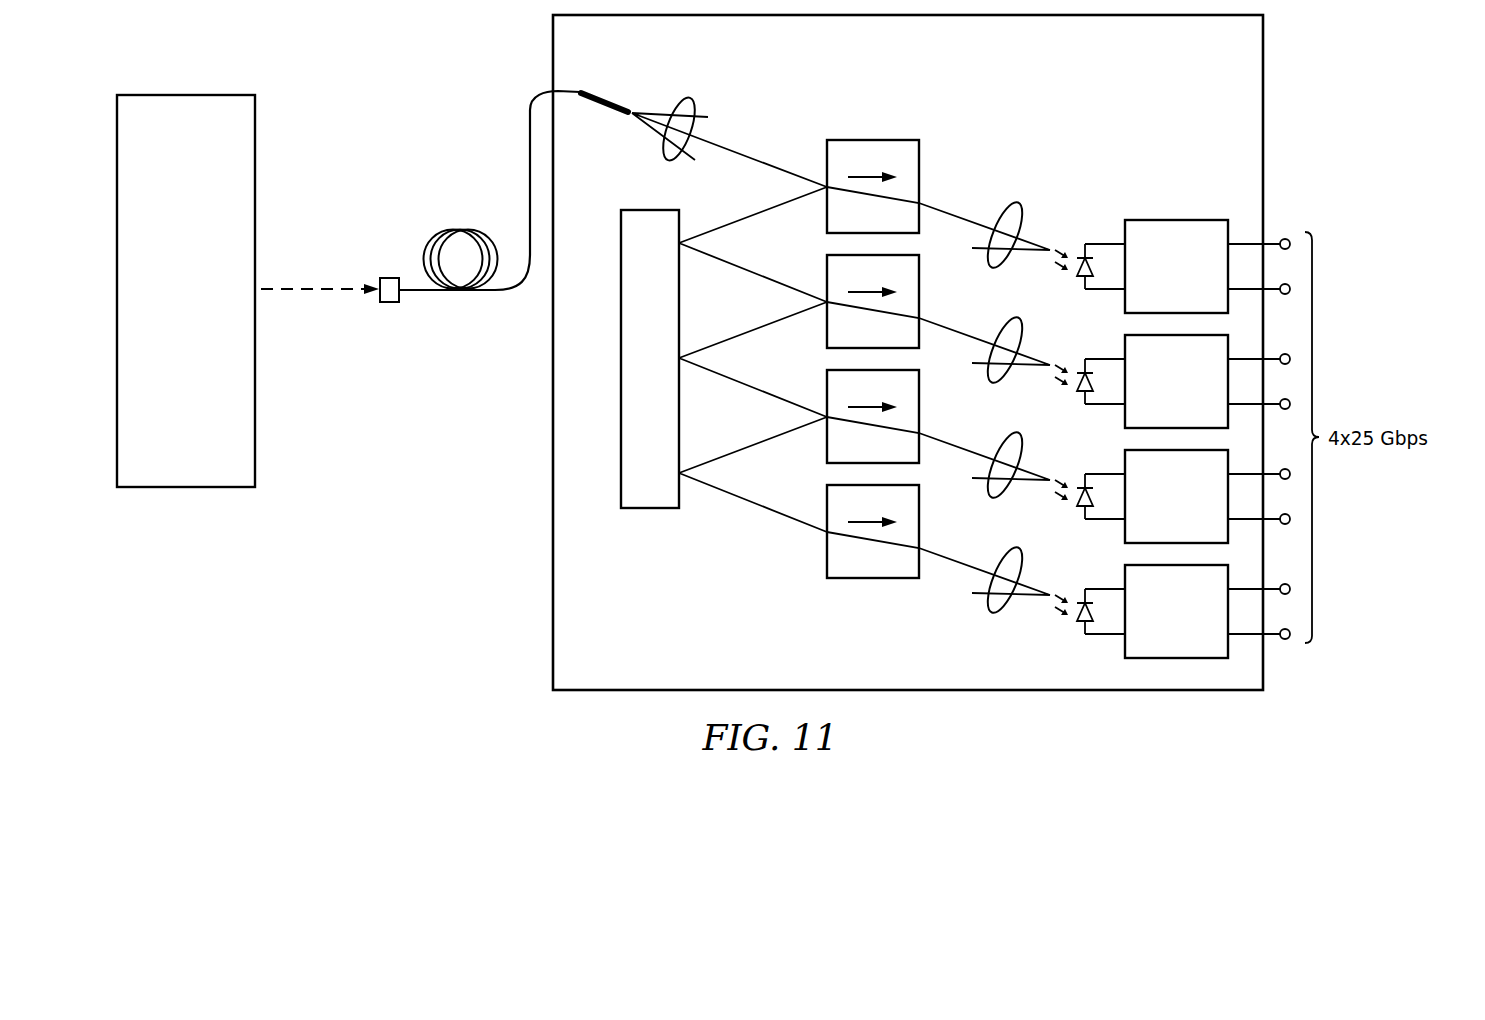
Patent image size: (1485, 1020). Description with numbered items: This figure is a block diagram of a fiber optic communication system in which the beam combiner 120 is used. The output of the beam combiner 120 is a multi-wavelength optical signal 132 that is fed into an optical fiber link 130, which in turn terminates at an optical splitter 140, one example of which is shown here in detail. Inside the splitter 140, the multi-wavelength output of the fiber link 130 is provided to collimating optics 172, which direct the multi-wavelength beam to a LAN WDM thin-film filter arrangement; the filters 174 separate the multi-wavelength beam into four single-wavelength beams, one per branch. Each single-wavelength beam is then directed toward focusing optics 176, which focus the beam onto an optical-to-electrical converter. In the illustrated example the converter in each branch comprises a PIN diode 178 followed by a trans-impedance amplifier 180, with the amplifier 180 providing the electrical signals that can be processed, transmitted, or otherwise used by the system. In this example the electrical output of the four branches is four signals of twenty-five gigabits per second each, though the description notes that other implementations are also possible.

The beam combiner 120 is at (164, 335).
The optical fiber link 130 is at (460, 230).
The multiplexed optical signal 132 is at (308, 289).
The optical splitter 140 is at (1275, 166).
The collimating optics 172 is at (690, 98).
The optical filter 174 is at (870, 140).
The focusing optics 176 is at (1017, 202).
The PIN diode 178 is at (1075, 285).
The trans-impedance amplifier 180 is at (1156, 294).